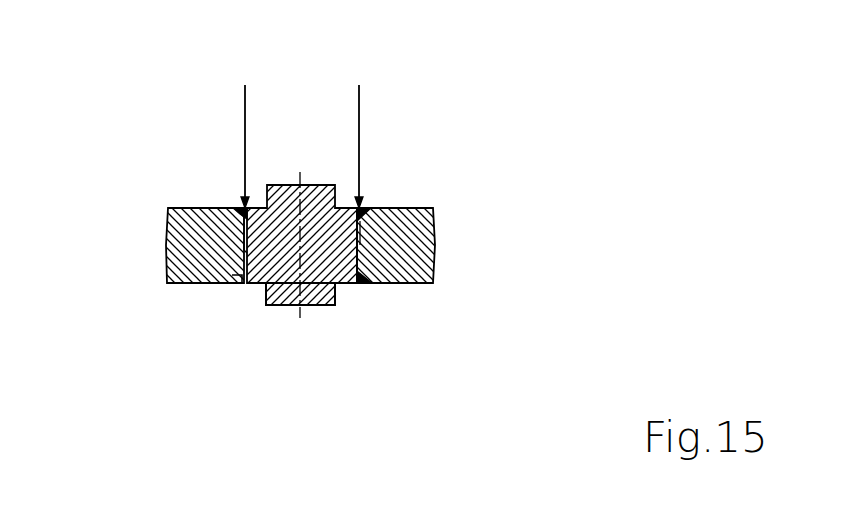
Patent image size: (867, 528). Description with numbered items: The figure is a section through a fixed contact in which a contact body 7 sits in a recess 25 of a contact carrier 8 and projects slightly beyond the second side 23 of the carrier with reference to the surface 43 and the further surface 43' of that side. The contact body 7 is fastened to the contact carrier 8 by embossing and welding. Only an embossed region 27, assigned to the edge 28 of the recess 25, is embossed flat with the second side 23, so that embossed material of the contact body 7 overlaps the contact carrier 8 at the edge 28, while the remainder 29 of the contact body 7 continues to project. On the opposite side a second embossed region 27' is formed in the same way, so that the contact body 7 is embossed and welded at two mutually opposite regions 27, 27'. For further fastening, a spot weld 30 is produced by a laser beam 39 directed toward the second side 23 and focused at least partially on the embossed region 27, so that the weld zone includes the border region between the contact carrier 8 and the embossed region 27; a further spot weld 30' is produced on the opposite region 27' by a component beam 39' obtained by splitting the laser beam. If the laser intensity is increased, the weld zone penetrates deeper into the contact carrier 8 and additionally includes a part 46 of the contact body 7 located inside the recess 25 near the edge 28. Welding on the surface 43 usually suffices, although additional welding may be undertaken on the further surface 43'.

The contact body 7 is at (327, 258).
The contact carrier 8 is at (420, 236).
The second side 23 is at (437, 207).
The recess 25 is at (247, 253).
The embossed region 27 is at (204, 157).
The embossed region 27' is at (416, 154).
The edge of the recess 28 is at (241, 213).
The remainder of the contact body 29 is at (312, 185).
The spot weld 30 is at (158, 165).
The spot weld 30' is at (440, 171).
The laser beam 39 is at (231, 134).
The component laser beam 39' is at (377, 134).
The surface of the second side 43 is at (156, 220).
The further surface of the second side 43' is at (417, 335).
The part of the weld zone 46 is at (240, 232).